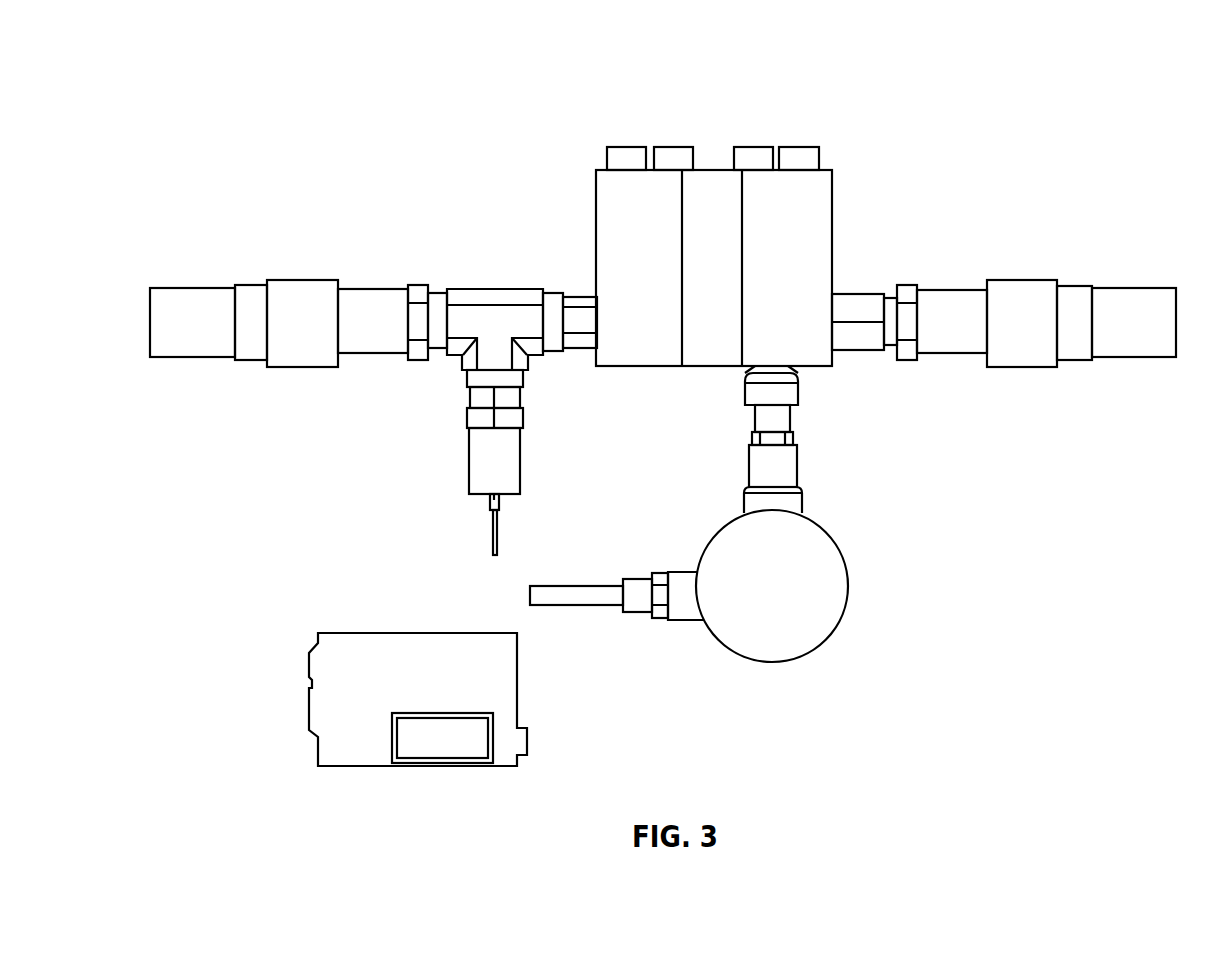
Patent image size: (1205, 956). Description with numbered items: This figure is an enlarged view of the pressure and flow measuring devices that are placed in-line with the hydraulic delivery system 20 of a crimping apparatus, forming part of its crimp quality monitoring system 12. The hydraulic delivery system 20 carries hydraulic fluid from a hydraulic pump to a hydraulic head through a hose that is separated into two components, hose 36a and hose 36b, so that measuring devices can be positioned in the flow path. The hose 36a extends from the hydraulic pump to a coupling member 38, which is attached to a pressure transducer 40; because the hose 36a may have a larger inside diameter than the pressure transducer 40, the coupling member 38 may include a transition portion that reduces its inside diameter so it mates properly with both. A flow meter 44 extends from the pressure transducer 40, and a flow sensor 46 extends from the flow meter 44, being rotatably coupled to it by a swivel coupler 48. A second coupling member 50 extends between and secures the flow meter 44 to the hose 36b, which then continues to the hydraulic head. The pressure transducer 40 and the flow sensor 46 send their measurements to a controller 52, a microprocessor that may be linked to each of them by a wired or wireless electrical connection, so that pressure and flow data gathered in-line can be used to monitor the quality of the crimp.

The crimp quality monitoring system 12 is at (800, 97).
The hydraulic delivery system 20 is at (153, 428).
The hose 36a is at (172, 290).
The hose 36b is at (1117, 288).
The coupling member 38 is at (320, 357).
The pressure transducer 40 is at (467, 400).
The flow meter 44 is at (833, 192).
The flow sensor 46 is at (843, 612).
The swivel coupler 48 is at (800, 388).
The coupling member 50 is at (932, 290).
The controller 52 is at (517, 700).